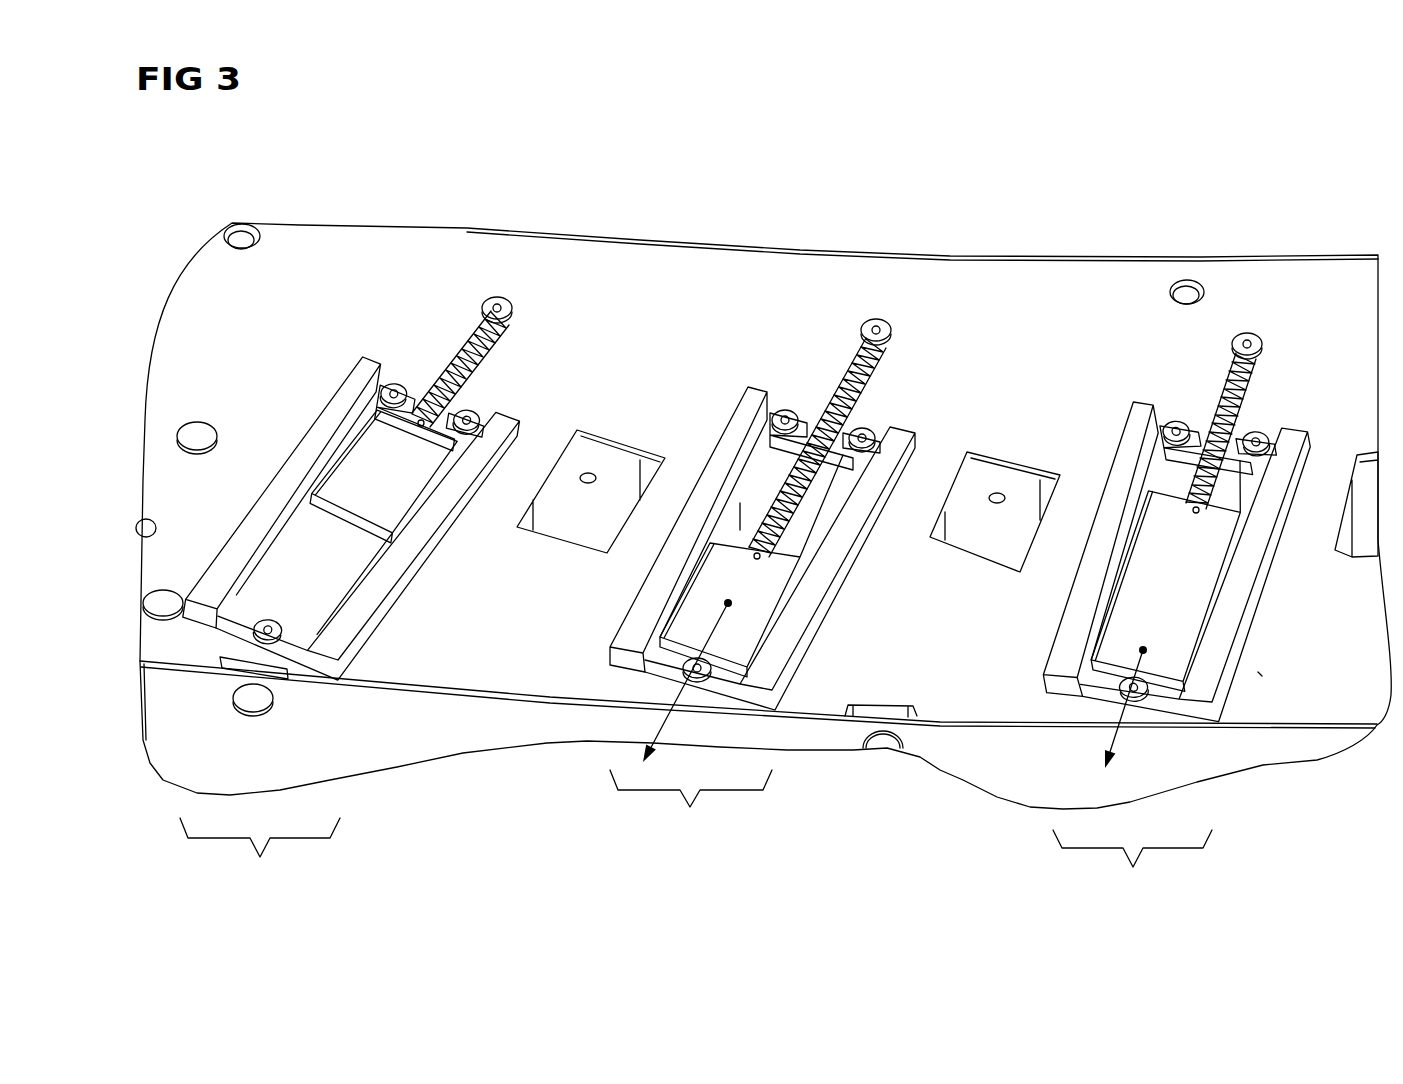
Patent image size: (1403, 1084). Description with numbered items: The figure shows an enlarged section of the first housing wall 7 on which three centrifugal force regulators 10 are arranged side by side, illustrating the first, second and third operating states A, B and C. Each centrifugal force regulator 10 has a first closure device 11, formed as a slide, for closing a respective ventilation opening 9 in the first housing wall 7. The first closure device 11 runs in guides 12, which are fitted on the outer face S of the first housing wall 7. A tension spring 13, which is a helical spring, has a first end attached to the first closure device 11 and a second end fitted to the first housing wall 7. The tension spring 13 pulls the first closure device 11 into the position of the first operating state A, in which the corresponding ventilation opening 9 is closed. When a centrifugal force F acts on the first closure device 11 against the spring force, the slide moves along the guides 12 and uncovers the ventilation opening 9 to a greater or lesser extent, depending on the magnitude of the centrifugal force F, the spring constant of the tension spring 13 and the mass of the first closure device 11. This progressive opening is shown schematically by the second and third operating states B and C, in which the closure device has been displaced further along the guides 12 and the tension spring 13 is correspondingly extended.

The first housing wall 7 is at (1020, 305).
The ventilation opening 9 is at (767, 482).
The centrifugal force regulator 10 is at (1265, 680).
The first closure device 11 is at (345, 478).
The guides 12 is at (792, 630).
The tension spring 13 is at (1250, 377).
The outer face S is at (613, 272).
The centrifugal force F is at (675, 742).
The first operating state A is at (260, 859).
The second operating state B is at (691, 811).
The third operating state C is at (1132, 873).